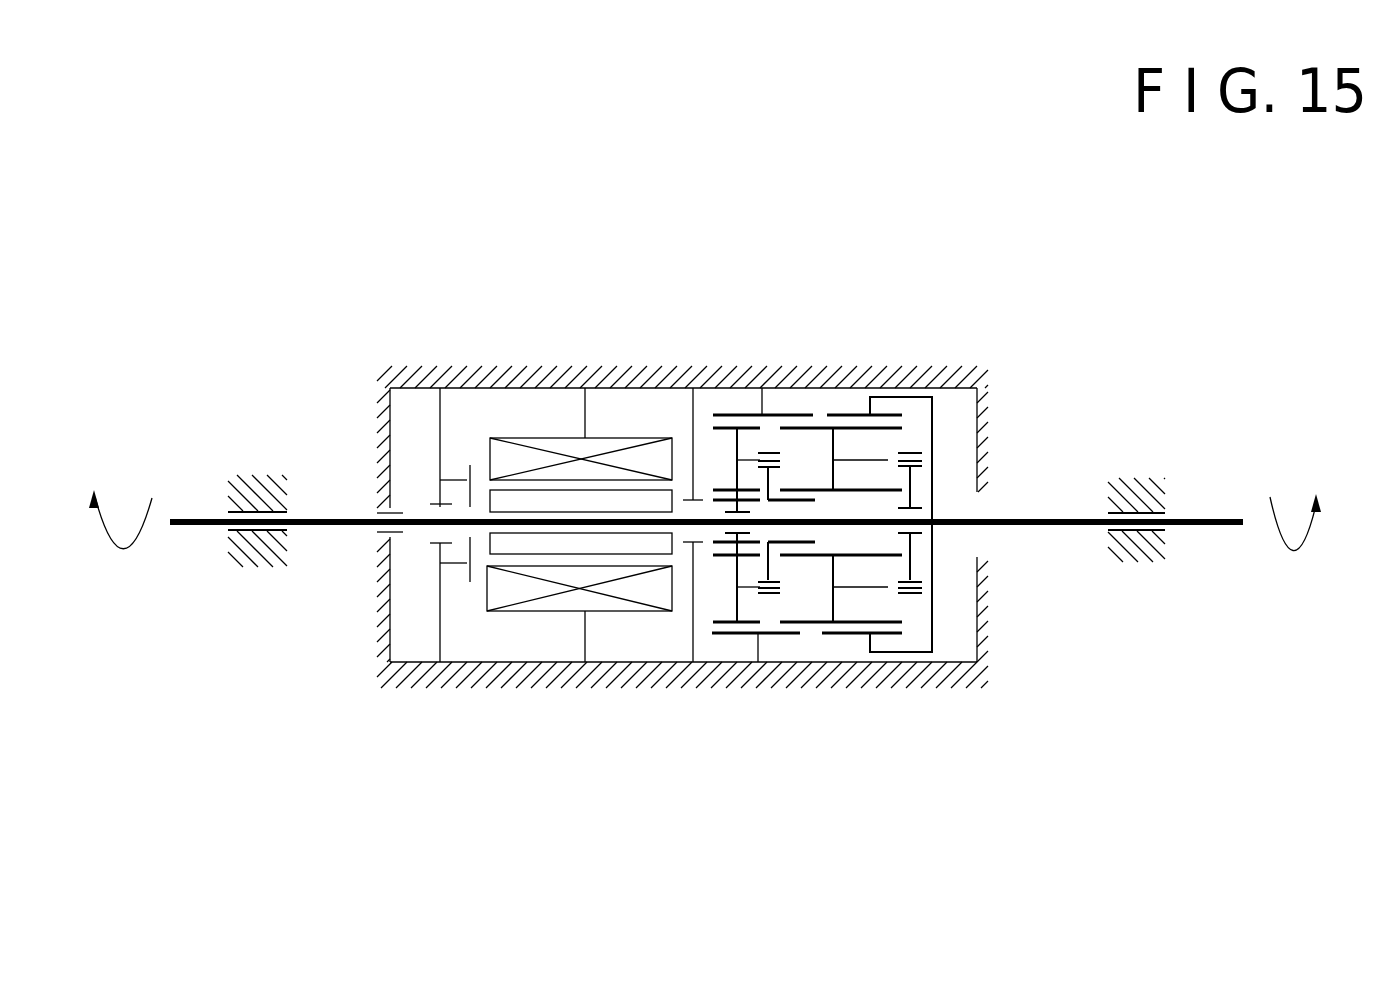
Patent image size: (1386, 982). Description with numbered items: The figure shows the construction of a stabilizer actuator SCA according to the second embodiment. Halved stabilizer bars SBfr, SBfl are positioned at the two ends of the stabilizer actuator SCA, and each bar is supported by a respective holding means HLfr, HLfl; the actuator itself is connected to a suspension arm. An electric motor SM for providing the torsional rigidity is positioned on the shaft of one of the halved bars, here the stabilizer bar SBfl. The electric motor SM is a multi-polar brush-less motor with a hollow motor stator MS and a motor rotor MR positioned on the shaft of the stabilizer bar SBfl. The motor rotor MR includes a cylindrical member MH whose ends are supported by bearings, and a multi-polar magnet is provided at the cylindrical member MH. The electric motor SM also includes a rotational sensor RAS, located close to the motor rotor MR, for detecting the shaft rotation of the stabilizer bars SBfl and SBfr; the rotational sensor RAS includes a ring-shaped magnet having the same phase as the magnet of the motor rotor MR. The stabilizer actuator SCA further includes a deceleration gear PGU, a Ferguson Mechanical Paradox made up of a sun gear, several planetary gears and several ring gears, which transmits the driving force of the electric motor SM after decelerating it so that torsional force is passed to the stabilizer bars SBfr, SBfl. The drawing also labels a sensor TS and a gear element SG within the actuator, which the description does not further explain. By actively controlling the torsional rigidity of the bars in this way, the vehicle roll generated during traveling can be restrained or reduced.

The stabilizer actuator SCA is at (628, 362).
The electric motor SM is at (566, 534).
The motor rotor MR is at (493, 500).
The hollow motor stator MS is at (534, 460).
The cylindrical member MH is at (633, 557).
The rotational sensor RAS is at (455, 567).
The deceleration gear PGU is at (862, 556).
The torsion sensor TS is at (838, 516).
The speed reduction gear SG is at (880, 532).
The stabilizer bar SBfl is at (355, 517).
The stabilizer bar SBfr is at (1043, 518).
The holding means HLfl is at (237, 480).
The holding means HLfr is at (1163, 480).